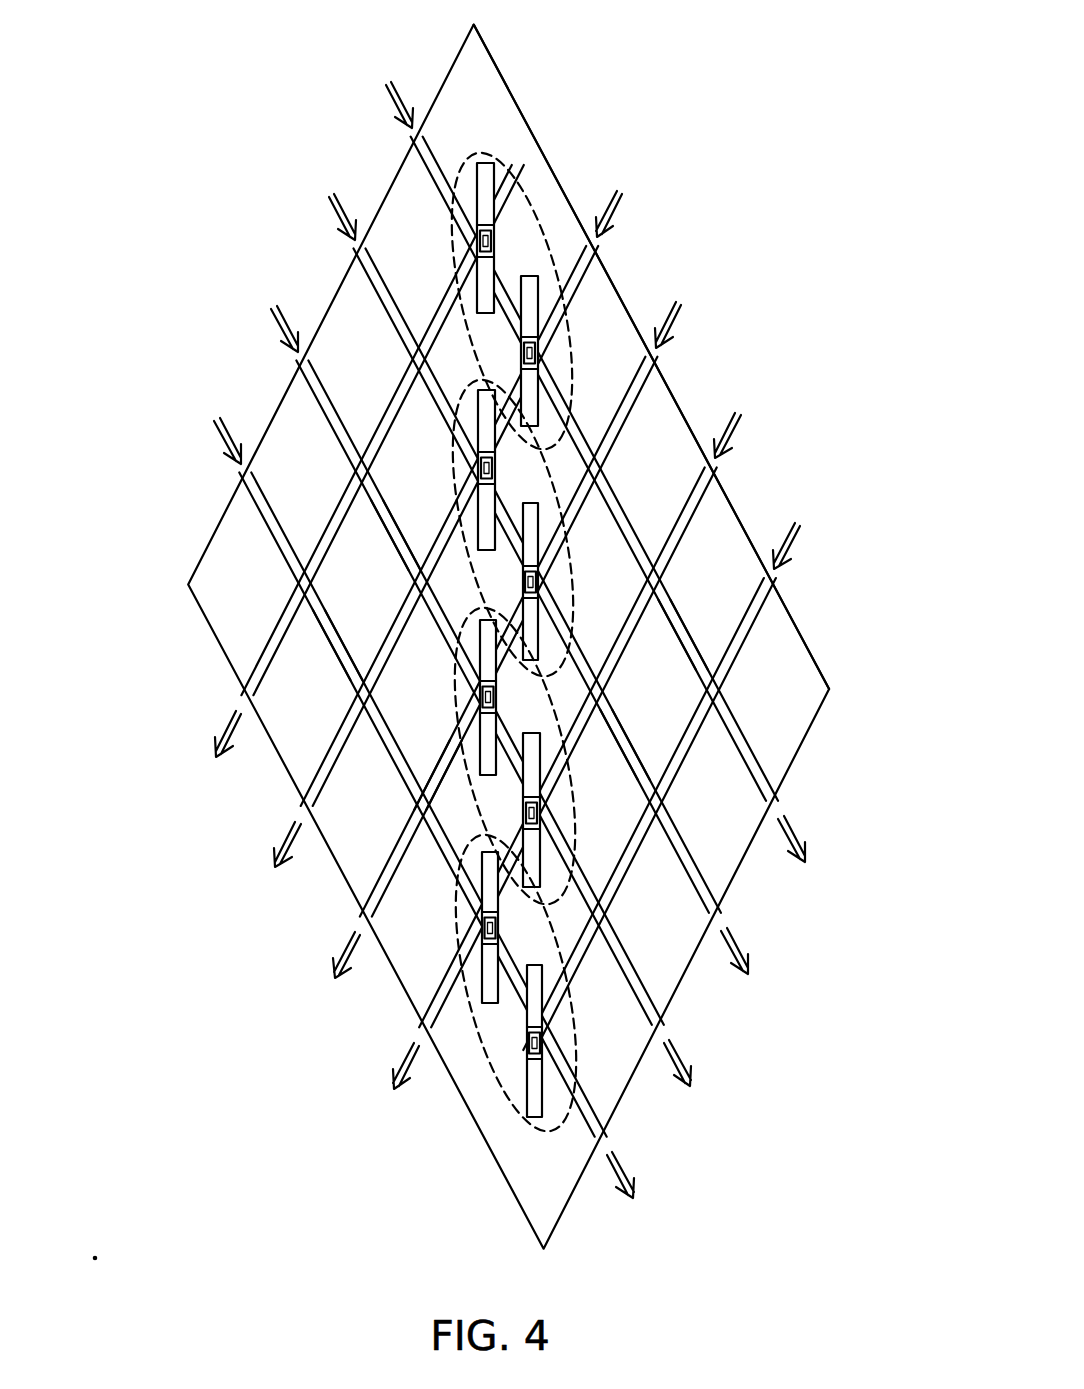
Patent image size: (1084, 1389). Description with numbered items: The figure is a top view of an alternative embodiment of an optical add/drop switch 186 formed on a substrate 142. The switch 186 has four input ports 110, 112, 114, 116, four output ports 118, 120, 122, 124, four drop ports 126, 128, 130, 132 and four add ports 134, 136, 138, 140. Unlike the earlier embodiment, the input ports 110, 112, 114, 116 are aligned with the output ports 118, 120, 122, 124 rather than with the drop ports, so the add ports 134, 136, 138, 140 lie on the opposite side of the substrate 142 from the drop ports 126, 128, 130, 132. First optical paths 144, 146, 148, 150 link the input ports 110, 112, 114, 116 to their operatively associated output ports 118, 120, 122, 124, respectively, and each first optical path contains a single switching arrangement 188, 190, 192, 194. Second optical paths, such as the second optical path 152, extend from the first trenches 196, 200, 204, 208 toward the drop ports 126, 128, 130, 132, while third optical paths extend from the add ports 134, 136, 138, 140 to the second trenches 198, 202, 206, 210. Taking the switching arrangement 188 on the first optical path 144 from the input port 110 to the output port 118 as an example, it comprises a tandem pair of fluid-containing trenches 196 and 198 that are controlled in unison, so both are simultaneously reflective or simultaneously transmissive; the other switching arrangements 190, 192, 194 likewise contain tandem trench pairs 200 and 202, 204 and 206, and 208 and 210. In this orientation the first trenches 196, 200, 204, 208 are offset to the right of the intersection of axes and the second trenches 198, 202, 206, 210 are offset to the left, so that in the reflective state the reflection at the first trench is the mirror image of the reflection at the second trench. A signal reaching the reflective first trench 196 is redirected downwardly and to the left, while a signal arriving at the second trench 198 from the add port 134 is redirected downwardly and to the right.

The input port 110 is at (433, 157).
The input port 112 is at (372, 270).
The input port 114 is at (314, 382).
The input port 116 is at (256, 497).
The output port 118 is at (777, 792).
The output port 120 is at (718, 905).
The output port 122 is at (658, 1015).
The output port 124 is at (598, 1128).
The drop port 126 is at (252, 675).
The drop port 128 is at (312, 795).
The drop port 130 is at (372, 905).
The drop port 132 is at (432, 1015).
The add port 134 is at (580, 272).
The add port 136 is at (645, 375).
The add port 138 is at (705, 490).
The add port 140 is at (760, 605).
The substrate 142 is at (478, 67).
The first optical path 144 is at (690, 635).
The first optical path 146 is at (625, 748).
The first optical path 148 is at (395, 535).
The first optical path 150 is at (330, 645).
The second optical path 152 is at (438, 780).
The optical add/drop switch 186 is at (700, 146).
The switching arrangement 188 is at (500, 163).
The switching arrangement 190 is at (448, 437).
The switching arrangement 192 is at (562, 820).
The switching arrangement 194 is at (517, 1112).
The first trench 196 is at (487, 178).
The second trench 198 is at (540, 318).
The first trench 200 is at (485, 393).
The second trench 202 is at (538, 565).
The first trench 204 is at (481, 673).
The second trench 206 is at (540, 752).
The first trench 208 is at (483, 888).
The second trench 210 is at (536, 1020).